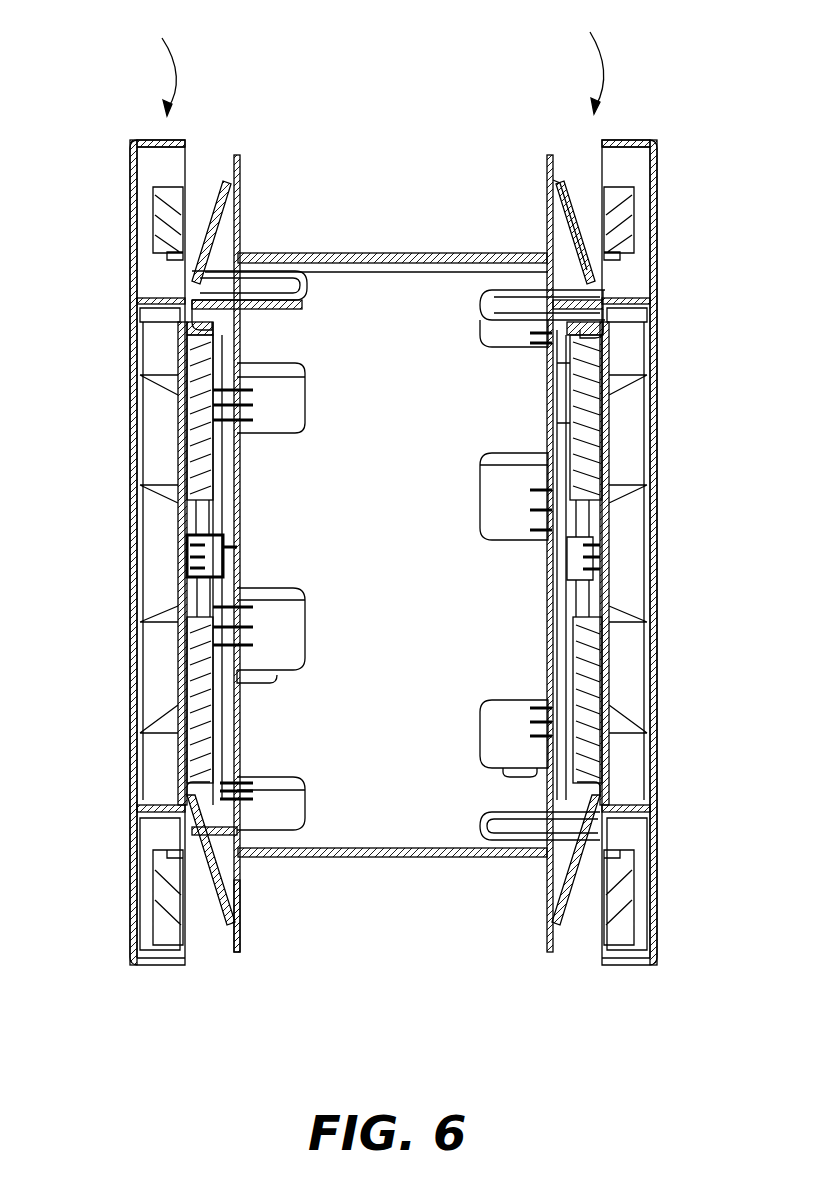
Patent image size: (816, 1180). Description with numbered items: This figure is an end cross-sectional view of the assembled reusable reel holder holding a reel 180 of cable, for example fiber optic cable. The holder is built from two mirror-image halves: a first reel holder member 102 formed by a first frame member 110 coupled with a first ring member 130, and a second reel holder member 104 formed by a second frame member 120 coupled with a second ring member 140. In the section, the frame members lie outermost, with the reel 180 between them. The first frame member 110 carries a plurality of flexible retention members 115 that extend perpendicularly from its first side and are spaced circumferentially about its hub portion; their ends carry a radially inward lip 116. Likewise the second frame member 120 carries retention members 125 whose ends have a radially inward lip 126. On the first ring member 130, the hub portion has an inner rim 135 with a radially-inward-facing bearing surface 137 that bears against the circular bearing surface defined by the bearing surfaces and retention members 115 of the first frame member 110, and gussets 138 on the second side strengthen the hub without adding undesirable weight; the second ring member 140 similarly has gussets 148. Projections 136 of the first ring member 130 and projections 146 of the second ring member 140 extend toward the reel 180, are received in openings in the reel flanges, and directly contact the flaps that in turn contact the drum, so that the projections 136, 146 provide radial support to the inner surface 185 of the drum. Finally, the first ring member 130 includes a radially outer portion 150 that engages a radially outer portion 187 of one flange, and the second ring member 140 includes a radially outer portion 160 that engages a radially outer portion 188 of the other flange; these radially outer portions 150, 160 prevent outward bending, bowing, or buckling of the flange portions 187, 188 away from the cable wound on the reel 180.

The first reel holder member 102 is at (593, 60).
The second reel holder member 104 is at (163, 64).
The first frame member 110 is at (634, 140).
The retention members 115 is at (538, 846).
The radially inward lip 116 is at (522, 782).
The second frame member 120 is at (147, 140).
The retention members 125 is at (207, 797).
The radially inward lip 126 is at (213, 331).
The first ring member 130 is at (571, 160).
The inner rim 135 is at (612, 331).
The projections 136 is at (492, 505).
The radially-inward-facing bearing surface 137 is at (612, 356).
The gussets 138 is at (562, 660).
The second ring member 140 is at (208, 165).
The projections 146 is at (290, 628).
The gussets 148 is at (222, 707).
The radially outer portion 150 is at (563, 933).
The radially outer portion 160 is at (233, 923).
The reel 180 is at (392, 253).
The inner surface 185 is at (372, 263).
The radially outer portion 187 is at (542, 203).
The radially outer portion 188 is at (243, 903).